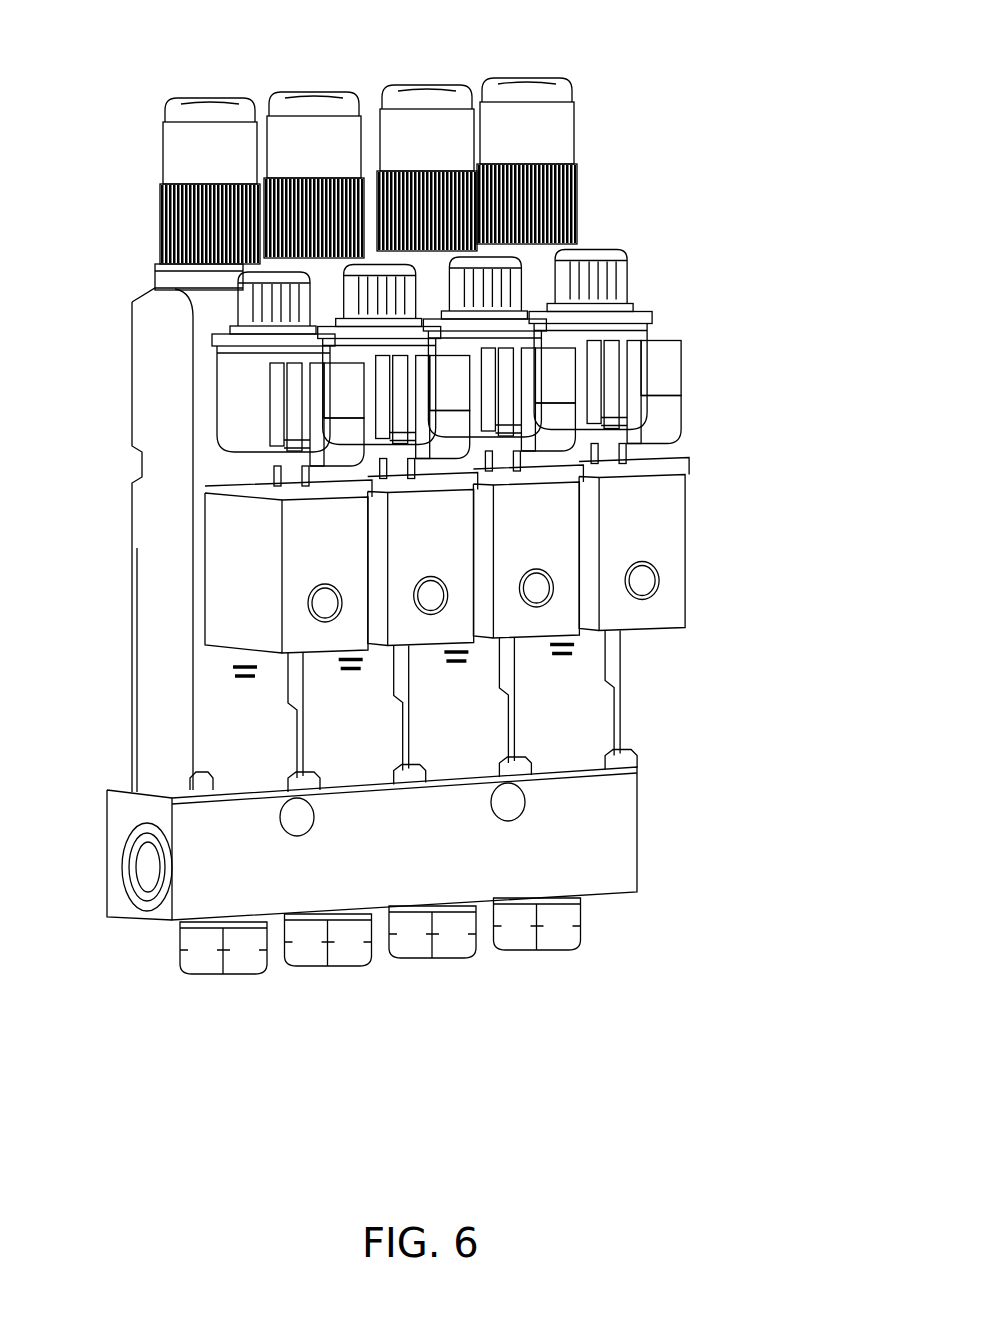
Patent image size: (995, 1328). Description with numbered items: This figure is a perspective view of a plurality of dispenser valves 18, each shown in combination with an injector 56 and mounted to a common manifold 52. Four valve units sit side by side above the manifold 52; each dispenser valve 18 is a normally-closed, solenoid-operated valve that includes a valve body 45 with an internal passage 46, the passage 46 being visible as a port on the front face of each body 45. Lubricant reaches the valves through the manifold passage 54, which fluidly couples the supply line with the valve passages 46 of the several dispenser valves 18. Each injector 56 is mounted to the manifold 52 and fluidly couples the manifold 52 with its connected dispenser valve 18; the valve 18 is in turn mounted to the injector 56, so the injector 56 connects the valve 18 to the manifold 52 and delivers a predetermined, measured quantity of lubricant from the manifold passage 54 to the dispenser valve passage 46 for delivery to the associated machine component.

The dispenser valve 18 is at (181, 575).
The valve body 45 is at (222, 607).
The internal passage 46 is at (326, 604).
The manifold 52 is at (641, 839).
The manifold passage 54 is at (150, 866).
The injector 56 is at (312, 62).